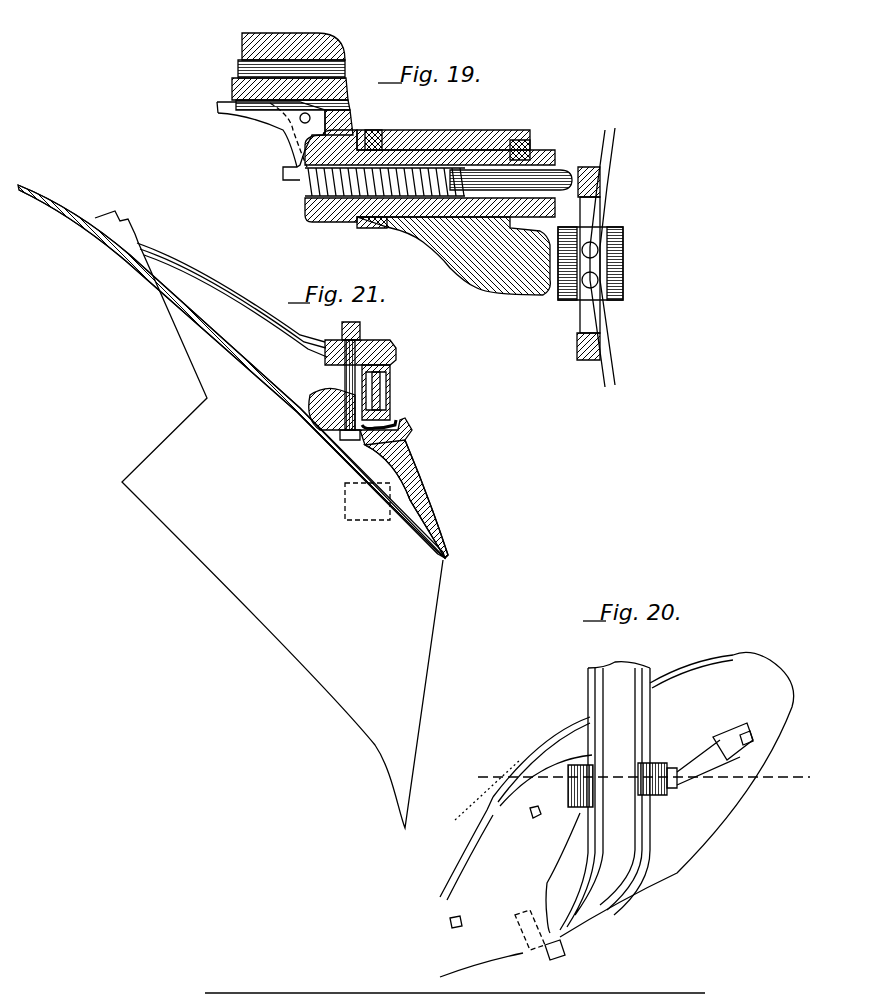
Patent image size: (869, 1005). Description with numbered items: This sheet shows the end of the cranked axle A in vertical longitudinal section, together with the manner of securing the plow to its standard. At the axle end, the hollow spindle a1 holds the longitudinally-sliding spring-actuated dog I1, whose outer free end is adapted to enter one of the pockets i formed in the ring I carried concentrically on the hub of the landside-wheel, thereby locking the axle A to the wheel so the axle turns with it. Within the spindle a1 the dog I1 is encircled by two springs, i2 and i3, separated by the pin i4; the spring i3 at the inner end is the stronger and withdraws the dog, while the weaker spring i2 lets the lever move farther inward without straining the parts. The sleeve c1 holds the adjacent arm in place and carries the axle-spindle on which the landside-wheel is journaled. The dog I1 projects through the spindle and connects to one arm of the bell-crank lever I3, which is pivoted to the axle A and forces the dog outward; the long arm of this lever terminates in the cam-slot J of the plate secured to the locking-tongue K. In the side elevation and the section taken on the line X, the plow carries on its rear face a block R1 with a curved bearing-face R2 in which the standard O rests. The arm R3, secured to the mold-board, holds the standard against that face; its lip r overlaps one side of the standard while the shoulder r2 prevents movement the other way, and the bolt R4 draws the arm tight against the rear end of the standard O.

In FIG. 19, the cranked axle A is at (330, 33).
In FIG. 19, the bell-crank lever I3 is at (297, 131).
In FIG. 19, the spring i3 is at (395, 150).
In FIG. 19, the pin i4 is at (415, 150).
In FIG. 19, the spring i2 is at (480, 150).
In FIG. 19, the sleeve c1 is at (540, 150).
In FIG. 19, the spindle a1 is at (540, 170).
In FIG. 19, the dog I1 is at (568, 175).
In FIG. 19, the pockets i is at (580, 192).
In FIG. 19, the ring I is at (583, 362).
In FIG. 21, the locking-tongue K is at (231, 506).
In FIG. 21, the arm R3 is at (266, 305).
In FIG. 21, the bolt R4 is at (354, 322).
In FIG. 21, the lip r is at (395, 366).
In FIG. 21, the shoulder r2 is at (350, 400).
In FIG. 21, the standard O is at (392, 396).
In FIG. 21, the curved bearing-face R2 is at (403, 424).
In FIG. 21, the block R1 is at (400, 465).
In FIG. 20, the block R1 is at (550, 797).
In FIG. 20, the section line X is at (638, 776).
In FIG. 20, the cam-slot J is at (560, 957).